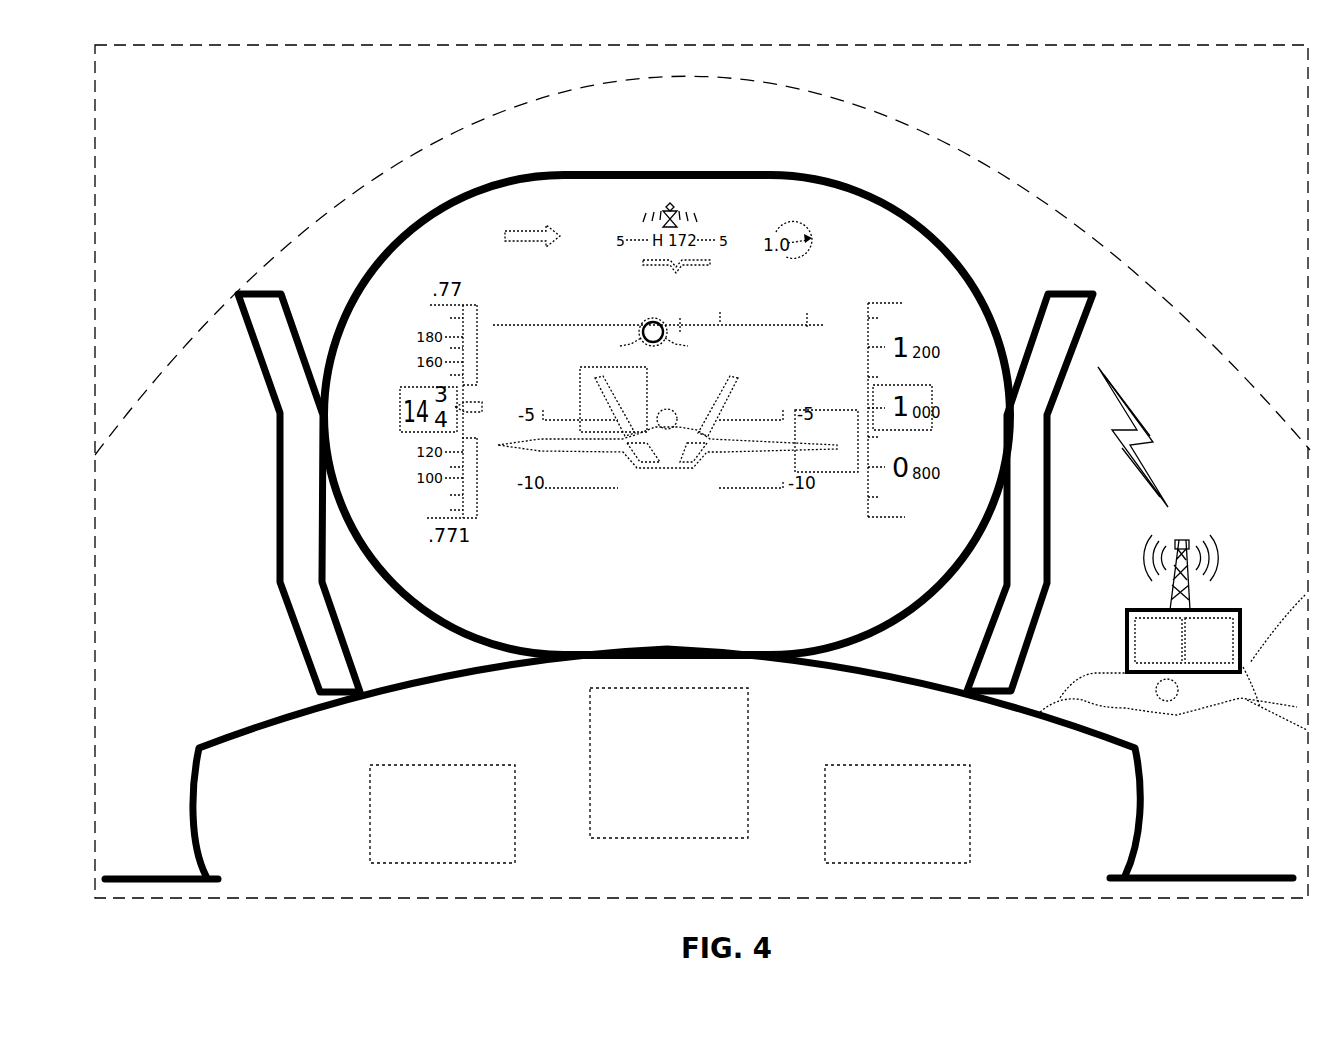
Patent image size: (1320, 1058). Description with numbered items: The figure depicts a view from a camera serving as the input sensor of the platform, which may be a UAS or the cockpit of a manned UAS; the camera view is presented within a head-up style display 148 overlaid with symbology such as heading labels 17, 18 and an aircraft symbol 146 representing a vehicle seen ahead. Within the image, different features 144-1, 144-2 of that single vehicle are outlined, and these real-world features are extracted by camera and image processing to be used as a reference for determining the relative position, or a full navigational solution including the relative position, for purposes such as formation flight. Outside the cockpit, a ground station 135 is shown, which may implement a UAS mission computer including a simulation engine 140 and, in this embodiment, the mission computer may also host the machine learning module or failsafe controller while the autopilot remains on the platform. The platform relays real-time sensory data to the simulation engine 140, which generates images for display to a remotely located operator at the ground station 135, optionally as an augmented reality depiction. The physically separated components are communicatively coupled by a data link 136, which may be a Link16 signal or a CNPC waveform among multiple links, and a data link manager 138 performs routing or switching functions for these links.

The head-up display combiner 148 is at (765, 173).
The feature 144-1 is at (597, 376).
The feature 144-2 is at (853, 412).
The aircraft symbol 146 is at (668, 460).
The data link 136 is at (1148, 432).
The ground station 135 is at (1211, 603).
The data link manager 138 is at (1158, 640).
The simulation engine 140 is at (1209, 640).
The heading tape label 17 is at (668, 307).
The heading tape label 18 is at (808, 309).